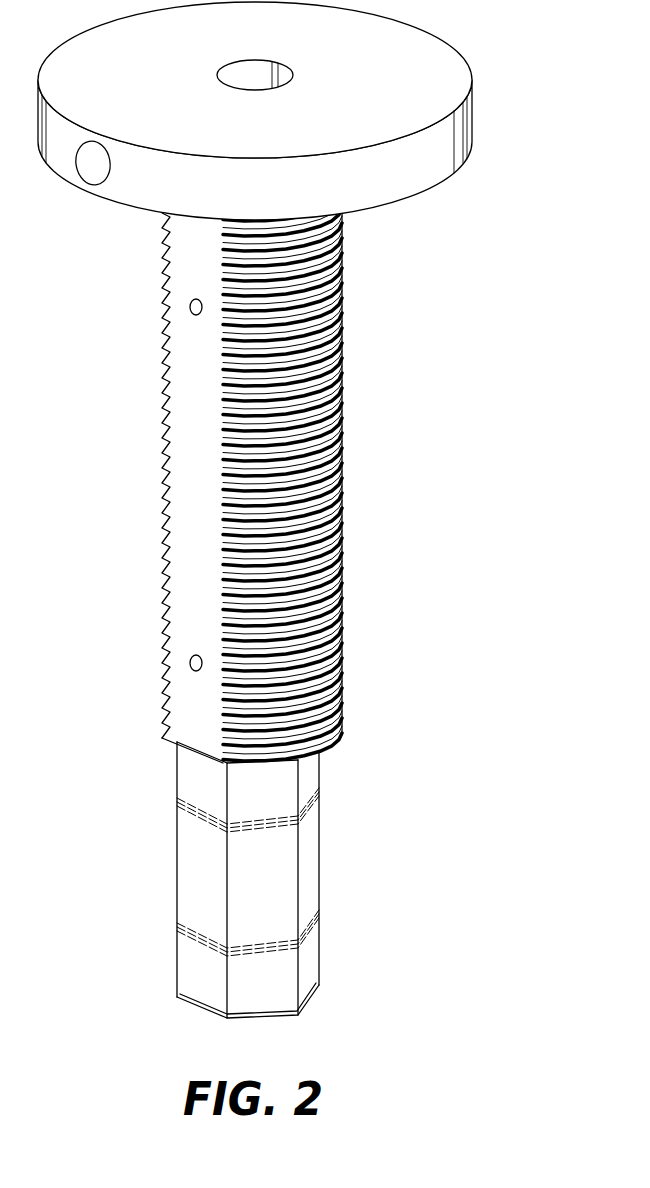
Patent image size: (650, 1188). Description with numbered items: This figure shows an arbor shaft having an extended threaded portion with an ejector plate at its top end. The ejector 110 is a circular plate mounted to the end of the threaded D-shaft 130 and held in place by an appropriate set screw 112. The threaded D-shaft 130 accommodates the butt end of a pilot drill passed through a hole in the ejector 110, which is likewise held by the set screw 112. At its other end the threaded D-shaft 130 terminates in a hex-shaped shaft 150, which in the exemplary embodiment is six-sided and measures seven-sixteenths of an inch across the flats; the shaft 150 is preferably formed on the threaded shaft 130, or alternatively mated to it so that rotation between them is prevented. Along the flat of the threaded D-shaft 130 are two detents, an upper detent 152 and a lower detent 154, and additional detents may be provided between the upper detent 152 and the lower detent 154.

The ejector 110 is at (284, 124).
The set screw 112 is at (97, 173).
The threaded D-shaft 130 is at (343, 463).
The hex-shaped shaft 150 is at (320, 880).
The upper detent 152 is at (190, 307).
The lower detent 154 is at (190, 663).